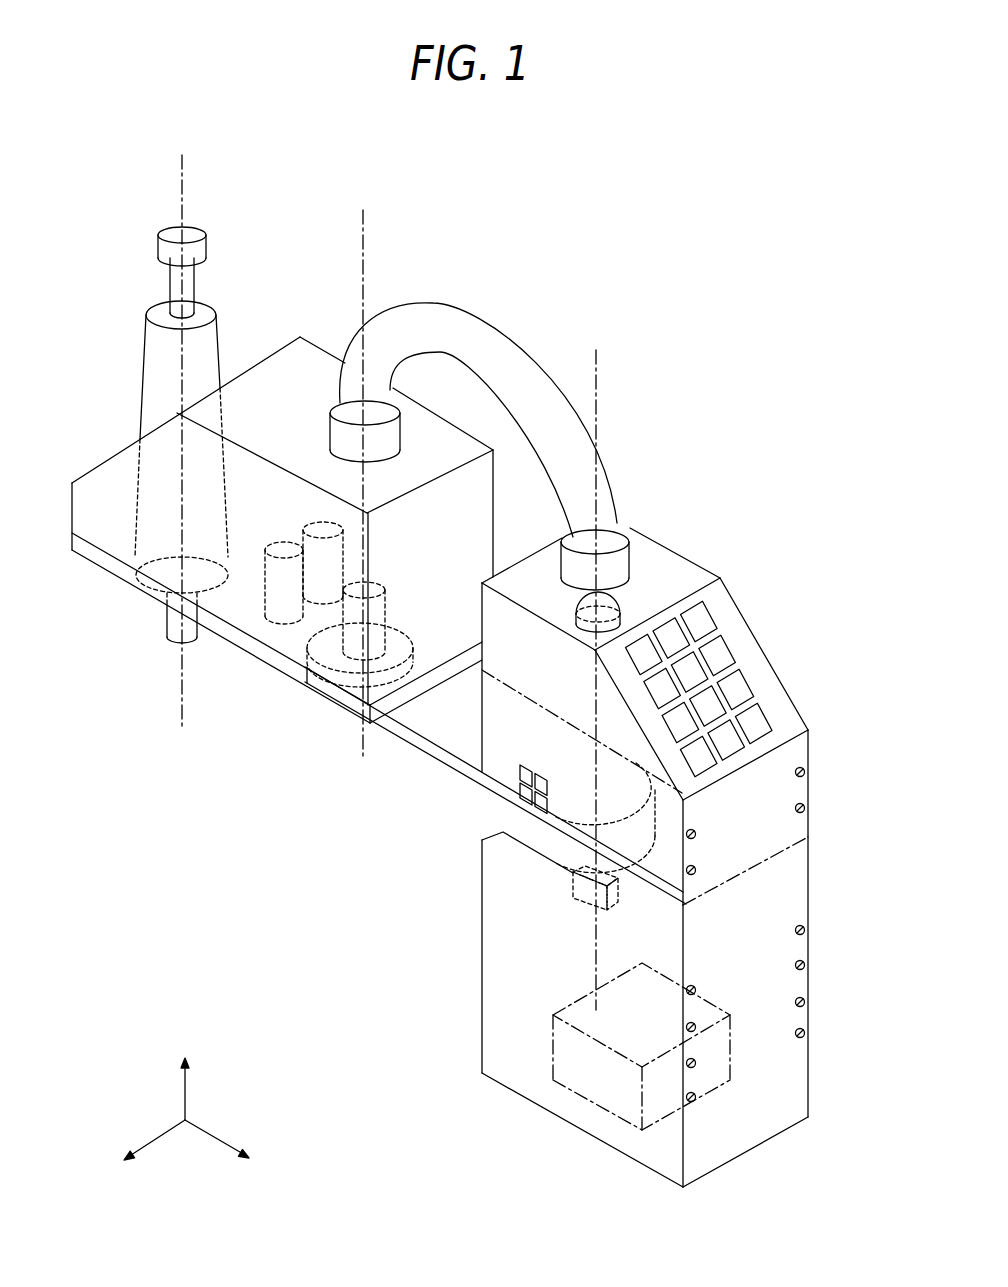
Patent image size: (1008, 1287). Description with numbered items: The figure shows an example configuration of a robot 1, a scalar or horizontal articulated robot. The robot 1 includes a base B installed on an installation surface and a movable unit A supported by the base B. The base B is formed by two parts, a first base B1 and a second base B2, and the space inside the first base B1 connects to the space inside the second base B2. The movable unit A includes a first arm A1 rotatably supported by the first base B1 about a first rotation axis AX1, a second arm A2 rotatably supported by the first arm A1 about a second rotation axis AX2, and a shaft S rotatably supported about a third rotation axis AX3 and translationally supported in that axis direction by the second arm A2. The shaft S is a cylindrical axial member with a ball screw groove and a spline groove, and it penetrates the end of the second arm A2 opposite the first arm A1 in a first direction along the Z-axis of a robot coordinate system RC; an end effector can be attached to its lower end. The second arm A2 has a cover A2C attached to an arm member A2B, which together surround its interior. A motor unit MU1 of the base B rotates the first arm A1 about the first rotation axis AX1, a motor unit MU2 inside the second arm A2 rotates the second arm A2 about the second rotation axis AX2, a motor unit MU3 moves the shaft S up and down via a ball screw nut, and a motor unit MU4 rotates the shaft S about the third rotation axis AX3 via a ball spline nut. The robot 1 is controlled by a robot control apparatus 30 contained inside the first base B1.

The robot 1 is at (230, 194).
The movable unit A is at (320, 772).
The first arm A1 is at (413, 762).
The second arm A2 is at (276, 685).
The arm member A2B is at (90, 568).
The cover A2C is at (262, 348).
The first rotation axis AX1 is at (600, 366).
The second rotation axis AX2 is at (361, 222).
The third rotation axis AX3 is at (178, 190).
The shaft S is at (165, 290).
The motor unit MU1 is at (573, 878).
The motor unit MU2 is at (325, 690).
The motor unit MU3 is at (367, 545).
The motor unit MU4 is at (180, 688).
The base B is at (825, 880).
The first base B1 is at (808, 1000).
The second base B2 is at (808, 774).
The robot control apparatus 30 is at (732, 1063).
The robot coordinate system RC is at (196, 1113).